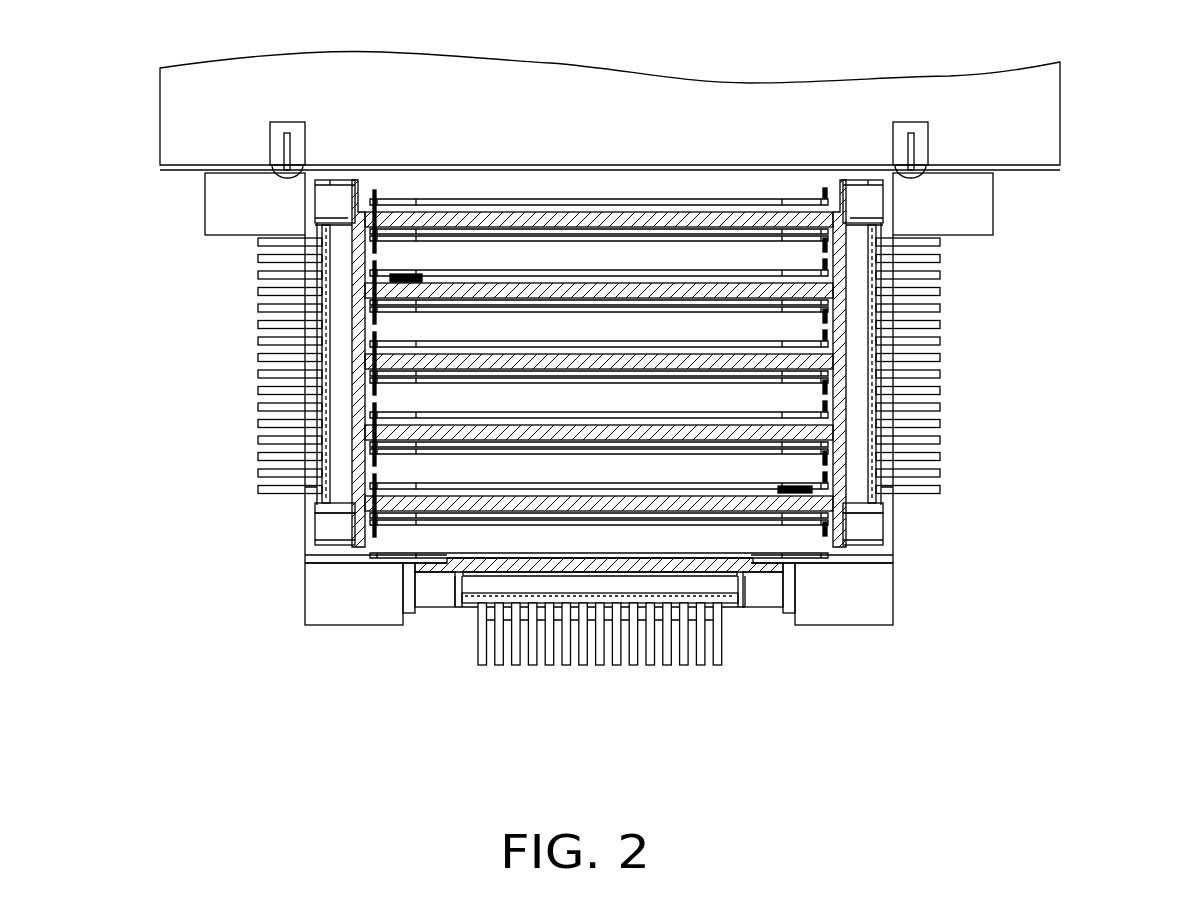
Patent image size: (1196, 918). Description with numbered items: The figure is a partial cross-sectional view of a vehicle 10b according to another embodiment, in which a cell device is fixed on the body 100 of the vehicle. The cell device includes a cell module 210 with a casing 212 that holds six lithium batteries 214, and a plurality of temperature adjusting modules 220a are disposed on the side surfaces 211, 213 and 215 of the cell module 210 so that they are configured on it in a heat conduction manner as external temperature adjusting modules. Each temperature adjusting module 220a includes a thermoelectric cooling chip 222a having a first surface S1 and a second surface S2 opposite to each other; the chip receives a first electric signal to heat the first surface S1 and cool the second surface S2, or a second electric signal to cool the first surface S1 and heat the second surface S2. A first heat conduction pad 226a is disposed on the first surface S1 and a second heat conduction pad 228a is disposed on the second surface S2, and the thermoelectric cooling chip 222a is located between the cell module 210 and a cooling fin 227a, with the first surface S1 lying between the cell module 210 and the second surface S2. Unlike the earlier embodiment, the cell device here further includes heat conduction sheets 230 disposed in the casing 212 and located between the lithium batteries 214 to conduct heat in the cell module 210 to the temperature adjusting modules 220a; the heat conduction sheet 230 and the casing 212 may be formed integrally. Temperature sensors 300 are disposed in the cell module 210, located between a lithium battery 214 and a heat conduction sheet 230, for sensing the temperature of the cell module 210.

The body 100 is at (1040, 120).
The vehicle 10b is at (1141, 752).
The cell module 210 is at (552, 439).
The side surface 211 is at (849, 237).
The casing 212 is at (353, 462).
The side surface 213 is at (350, 237).
The lithium battery 214 is at (393, 463).
The side surface 215 is at (436, 582).
The temperature adjusting module 220a is at (616, 491).
The thermoelectric cooling chip 222a is at (327, 305).
The first heat conduction pad 226a is at (848, 468).
The cooling fin 227a is at (245, 349).
The second heat conduction pad 228a is at (878, 442).
The heat conduction sheet 230 is at (833, 360).
The temperature sensor 300 is at (398, 274).
The first surface S1 is at (848, 491).
The second surface S2 is at (874, 390).